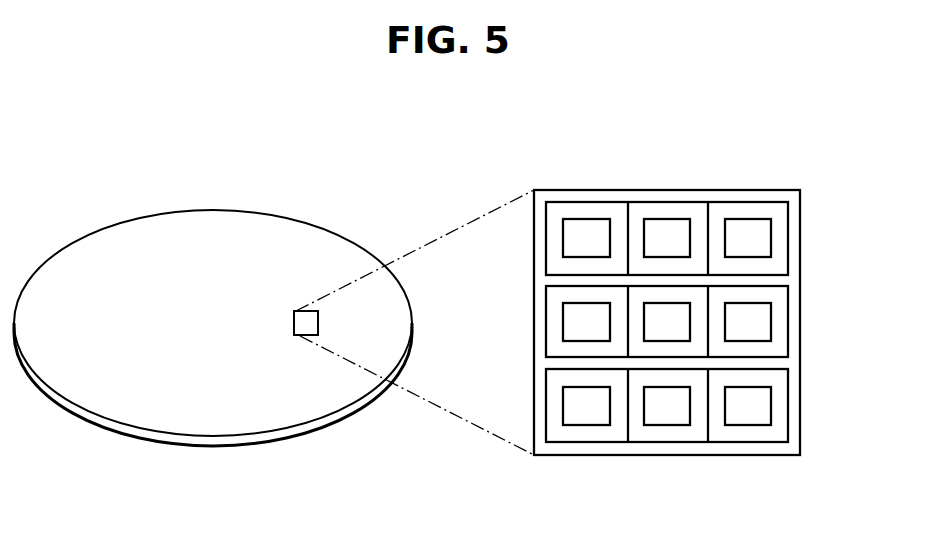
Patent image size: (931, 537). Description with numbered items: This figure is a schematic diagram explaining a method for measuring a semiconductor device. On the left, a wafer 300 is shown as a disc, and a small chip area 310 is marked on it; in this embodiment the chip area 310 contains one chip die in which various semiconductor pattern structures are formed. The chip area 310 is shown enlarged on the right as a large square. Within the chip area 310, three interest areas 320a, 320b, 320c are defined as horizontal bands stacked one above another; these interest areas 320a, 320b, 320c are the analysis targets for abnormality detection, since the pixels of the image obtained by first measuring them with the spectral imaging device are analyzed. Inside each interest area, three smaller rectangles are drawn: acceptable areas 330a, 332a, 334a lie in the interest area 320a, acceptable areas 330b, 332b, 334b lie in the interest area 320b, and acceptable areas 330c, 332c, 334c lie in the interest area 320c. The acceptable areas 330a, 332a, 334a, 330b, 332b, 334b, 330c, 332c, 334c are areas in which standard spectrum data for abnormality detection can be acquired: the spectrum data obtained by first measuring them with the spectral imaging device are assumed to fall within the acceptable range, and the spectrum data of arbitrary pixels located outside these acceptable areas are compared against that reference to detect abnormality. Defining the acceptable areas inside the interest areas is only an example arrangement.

The wafer 300 is at (212, 210).
The chip area 310 is at (302, 311).
The interest area 320a is at (788, 237).
The interest area 320b is at (788, 320).
The interest area 320c is at (788, 405).
The acceptable area 330a is at (587, 219).
The acceptable area 332a is at (668, 219).
The acceptable area 334a is at (748, 219).
The acceptable area 330b is at (563, 322).
The acceptable area 332b is at (690, 303).
The acceptable area 334b is at (771, 341).
The acceptable area 330c is at (587, 425).
The acceptable area 332c is at (667, 425).
The acceptable area 334c is at (748, 425).